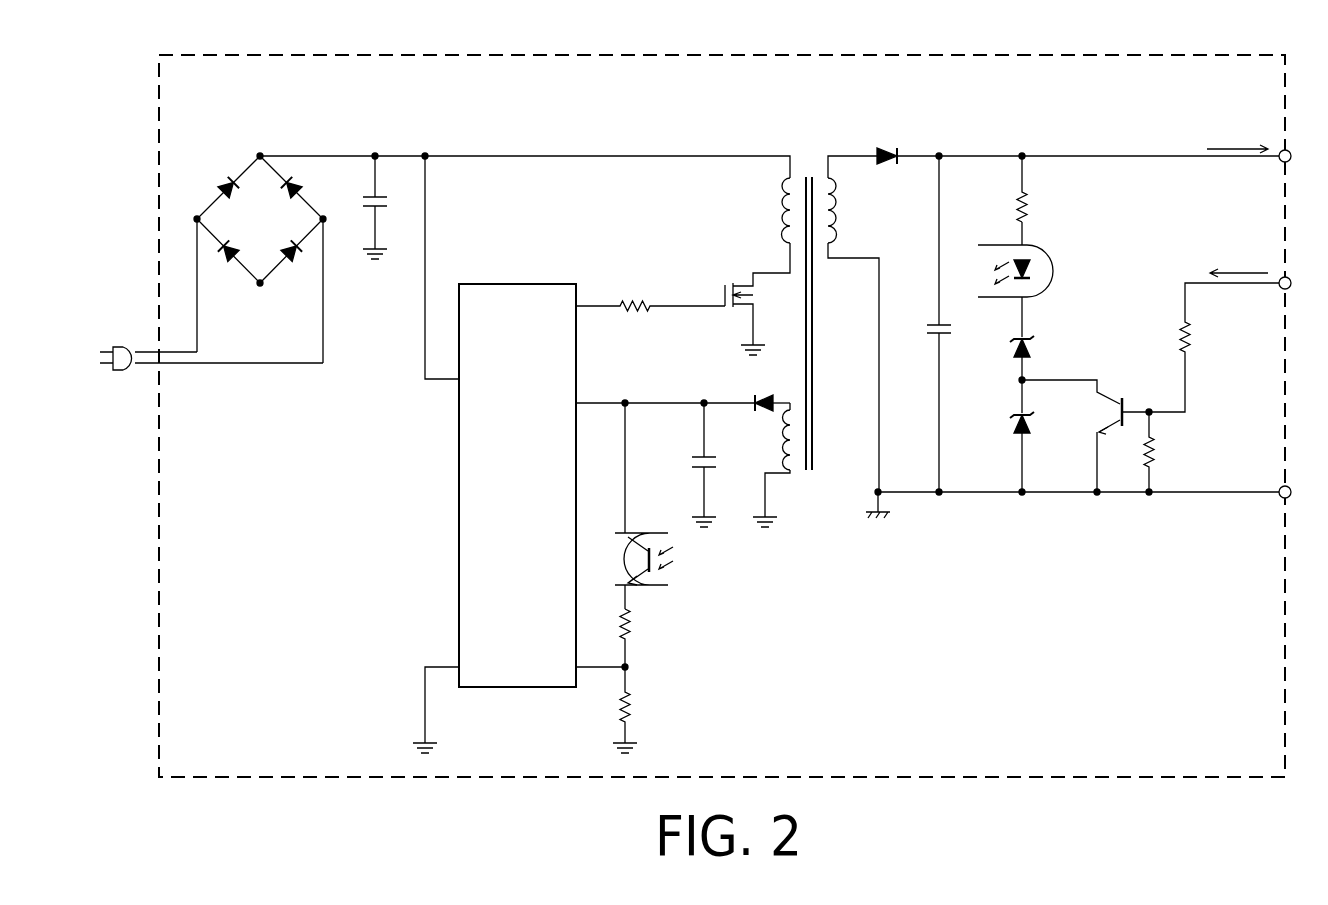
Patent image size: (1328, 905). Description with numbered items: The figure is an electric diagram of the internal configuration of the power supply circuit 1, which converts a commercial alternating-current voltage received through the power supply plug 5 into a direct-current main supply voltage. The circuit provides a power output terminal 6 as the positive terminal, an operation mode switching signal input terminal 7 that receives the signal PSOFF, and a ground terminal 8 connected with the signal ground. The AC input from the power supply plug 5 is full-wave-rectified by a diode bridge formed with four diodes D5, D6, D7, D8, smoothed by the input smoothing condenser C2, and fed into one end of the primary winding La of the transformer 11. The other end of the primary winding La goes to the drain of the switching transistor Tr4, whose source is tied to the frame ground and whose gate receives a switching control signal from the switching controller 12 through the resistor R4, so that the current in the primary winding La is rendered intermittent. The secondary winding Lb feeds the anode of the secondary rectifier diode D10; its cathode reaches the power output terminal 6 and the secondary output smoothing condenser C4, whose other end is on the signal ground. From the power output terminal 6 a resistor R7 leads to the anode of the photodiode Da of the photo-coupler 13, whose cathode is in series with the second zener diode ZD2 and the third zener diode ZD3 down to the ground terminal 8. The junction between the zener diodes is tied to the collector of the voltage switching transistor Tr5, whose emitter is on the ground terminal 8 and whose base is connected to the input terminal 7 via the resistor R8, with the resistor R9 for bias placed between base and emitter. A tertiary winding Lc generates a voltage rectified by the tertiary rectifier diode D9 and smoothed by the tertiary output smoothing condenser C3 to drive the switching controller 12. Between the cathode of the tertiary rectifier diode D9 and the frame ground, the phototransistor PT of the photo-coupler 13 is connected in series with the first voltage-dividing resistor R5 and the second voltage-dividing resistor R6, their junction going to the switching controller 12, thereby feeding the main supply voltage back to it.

The power supply circuit 1 is at (158, 89).
The power supply plug 5 is at (122, 345).
The power output terminal 6 is at (1291, 156).
The operation mode switching signal input terminal 7 is at (1291, 283).
The ground terminal 8 is at (1291, 492).
The transformer 11 is at (812, 323).
The switching controller 12 is at (522, 284).
The photo-coupler 13 is at (831, 406).
The diode D5 is at (230, 180).
The diode D6 is at (300, 187).
The diode D7 is at (230, 262).
The diode D8 is at (294, 262).
The tertiary rectifier diode D9 is at (762, 401).
The secondary rectifier diode D10 is at (878, 151).
The input smoothing condenser C2 is at (381, 207).
The tertiary output smoothing condenser C3 is at (698, 462).
The secondary output smoothing condenser C4 is at (934, 332).
The resistor R4 is at (630, 296).
The first voltage-dividing resistor R5 is at (634, 625).
The second voltage-dividing resistor R6 is at (634, 708).
The resistor R7 is at (1028, 205).
The resistor R8 is at (1177, 336).
The resistor for bias R9 is at (1156, 454).
The switching transistor Tr4 is at (727, 278).
The voltage switching transistor Tr5 is at (1110, 418).
The primary winding La is at (789, 215).
The secondary winding Lb is at (830, 211).
The tertiary winding Lc is at (786, 450).
The phototransistor PT is at (658, 533).
The photodiode Da is at (1036, 270).
The second zener diode ZD2 is at (1014, 347).
The third zener diode ZD3 is at (1014, 423).